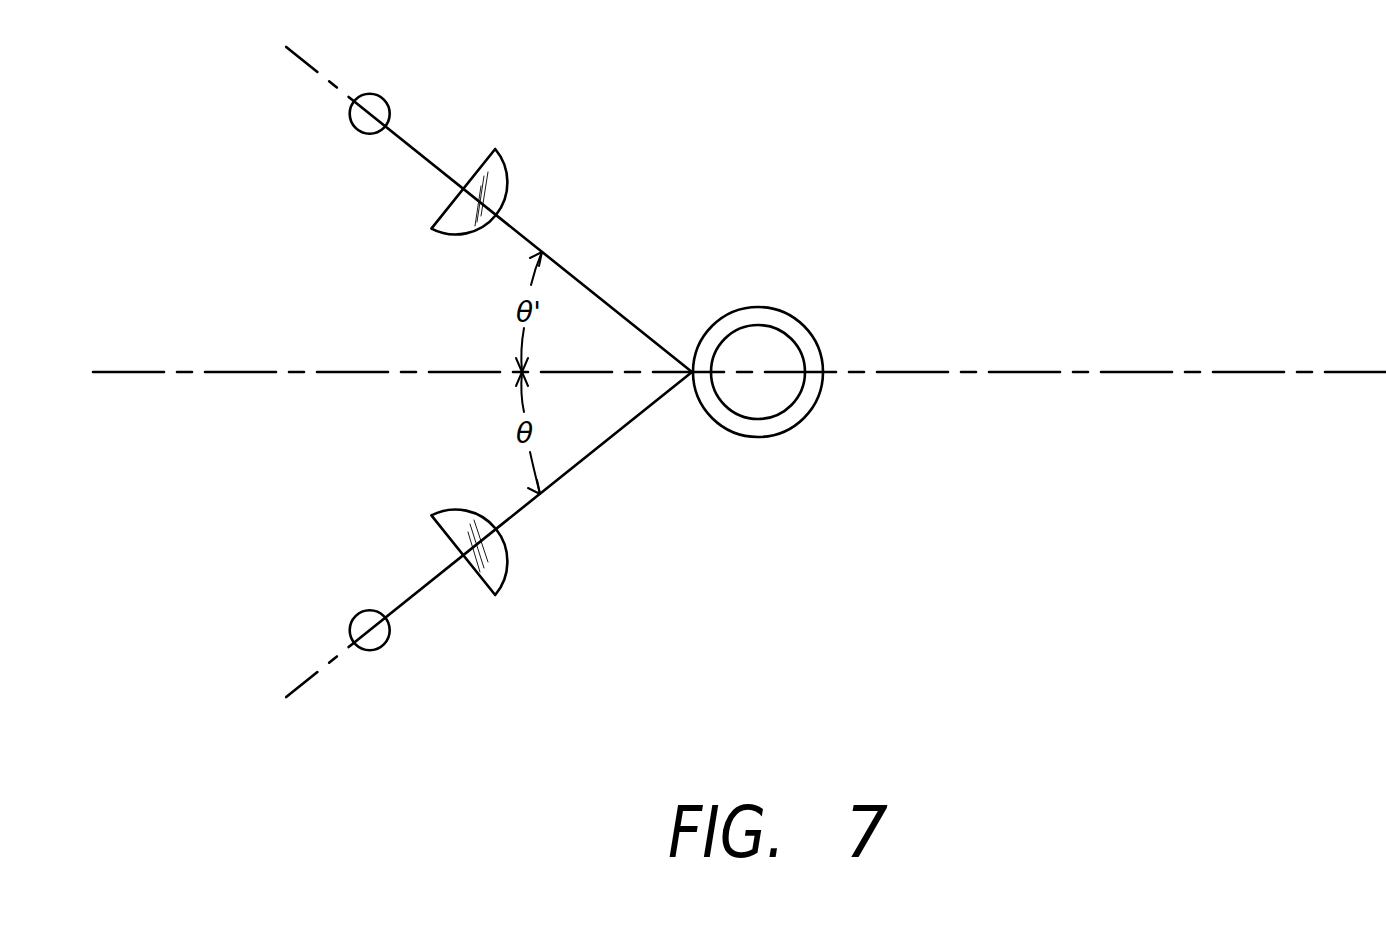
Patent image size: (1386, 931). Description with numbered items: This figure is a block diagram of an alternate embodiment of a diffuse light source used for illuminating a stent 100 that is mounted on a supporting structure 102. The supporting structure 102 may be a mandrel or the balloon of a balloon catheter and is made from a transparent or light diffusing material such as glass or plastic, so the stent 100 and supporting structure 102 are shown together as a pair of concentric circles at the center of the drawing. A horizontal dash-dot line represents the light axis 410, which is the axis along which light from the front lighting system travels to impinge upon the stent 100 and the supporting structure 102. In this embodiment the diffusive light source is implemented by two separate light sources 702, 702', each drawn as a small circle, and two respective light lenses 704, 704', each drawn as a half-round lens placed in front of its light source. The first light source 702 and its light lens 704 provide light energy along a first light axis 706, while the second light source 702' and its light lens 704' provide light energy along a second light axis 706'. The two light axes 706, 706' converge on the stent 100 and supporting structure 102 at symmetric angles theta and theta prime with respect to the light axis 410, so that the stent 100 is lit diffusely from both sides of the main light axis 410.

The stent 100 is at (800, 425).
The supporting structure 102 is at (787, 332).
The light axis 410 is at (1132, 372).
The light source 702 is at (439, 647).
The light source 702' is at (431, 85).
The light lens 704 is at (550, 552).
The light lens 704' is at (548, 178).
The light axis 706 is at (272, 660).
The light axis 706' is at (276, 89).